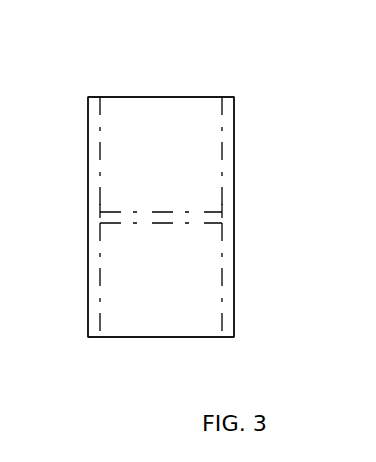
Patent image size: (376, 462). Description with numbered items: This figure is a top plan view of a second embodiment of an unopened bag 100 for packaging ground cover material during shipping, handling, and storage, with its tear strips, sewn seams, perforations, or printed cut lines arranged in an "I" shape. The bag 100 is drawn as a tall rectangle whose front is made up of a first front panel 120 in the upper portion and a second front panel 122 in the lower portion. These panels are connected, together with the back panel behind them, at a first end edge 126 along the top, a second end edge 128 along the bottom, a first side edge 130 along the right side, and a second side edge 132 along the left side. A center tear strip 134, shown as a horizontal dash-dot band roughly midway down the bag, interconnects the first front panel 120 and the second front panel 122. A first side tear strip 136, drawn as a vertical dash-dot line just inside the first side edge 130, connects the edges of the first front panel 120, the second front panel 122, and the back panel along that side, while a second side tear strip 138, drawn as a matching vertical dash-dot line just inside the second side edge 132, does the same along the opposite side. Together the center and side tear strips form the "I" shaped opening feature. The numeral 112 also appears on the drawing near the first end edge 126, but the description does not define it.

The bag 100 is at (261, 93).
The top wall 112 is at (110, 97).
The first front panel 120 is at (146, 123).
The second front panel 122 is at (136, 300).
The first end edge 126 is at (190, 97).
The second end edge 128 is at (173, 337).
The first side edge 130 is at (234, 164).
The second side edge 132 is at (88, 230).
The center tear strip 134 is at (153, 215).
The first side tear strip 136 is at (227, 286).
The second side tear strip 138 is at (98, 293).